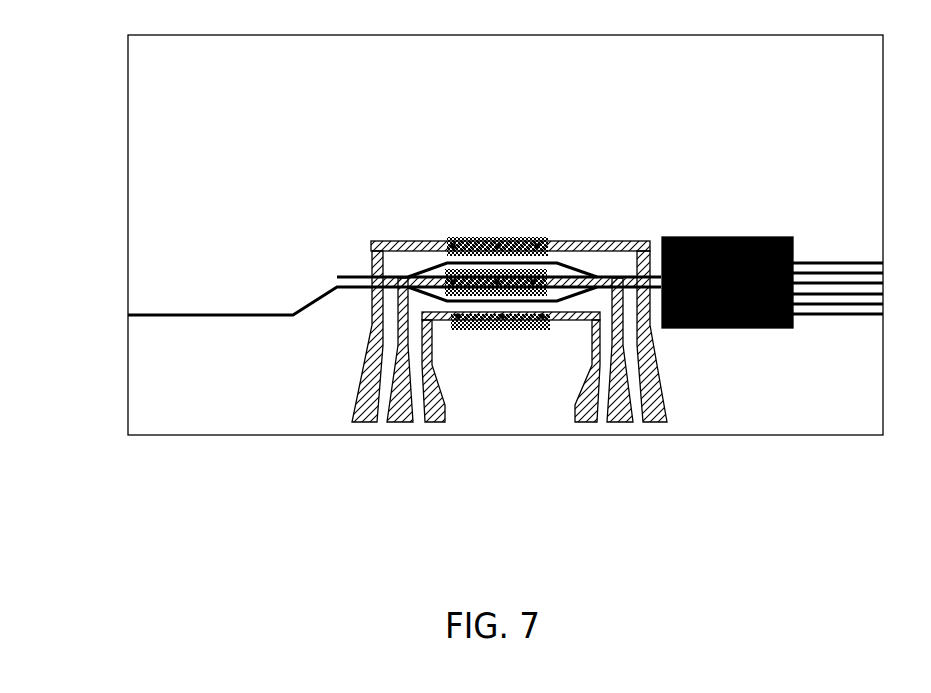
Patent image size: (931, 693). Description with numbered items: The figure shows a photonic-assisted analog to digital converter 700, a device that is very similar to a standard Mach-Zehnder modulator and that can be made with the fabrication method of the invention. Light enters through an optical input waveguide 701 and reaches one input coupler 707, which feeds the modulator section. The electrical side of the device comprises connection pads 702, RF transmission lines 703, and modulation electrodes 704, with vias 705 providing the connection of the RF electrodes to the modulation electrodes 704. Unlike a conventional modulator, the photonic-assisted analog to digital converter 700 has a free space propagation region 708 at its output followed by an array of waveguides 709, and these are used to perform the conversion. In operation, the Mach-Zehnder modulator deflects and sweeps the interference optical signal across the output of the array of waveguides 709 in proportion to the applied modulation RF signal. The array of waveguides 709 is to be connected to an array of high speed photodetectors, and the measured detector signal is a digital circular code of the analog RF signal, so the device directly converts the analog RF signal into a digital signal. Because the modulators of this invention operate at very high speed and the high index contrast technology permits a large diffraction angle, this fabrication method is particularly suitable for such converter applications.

The photonic-assisted analog to digital converter 700 is at (505, 235).
The optical input waveguide 701 is at (188, 315).
The connection pads 702 is at (399, 415).
The RF transmission lines 703 is at (428, 350).
The modulation electrodes 704 is at (485, 328).
The vias 705 is at (537, 248).
The input coupler 707 is at (366, 272).
The free space propagation region 708 is at (727, 236).
The array of waveguides 709 is at (827, 262).